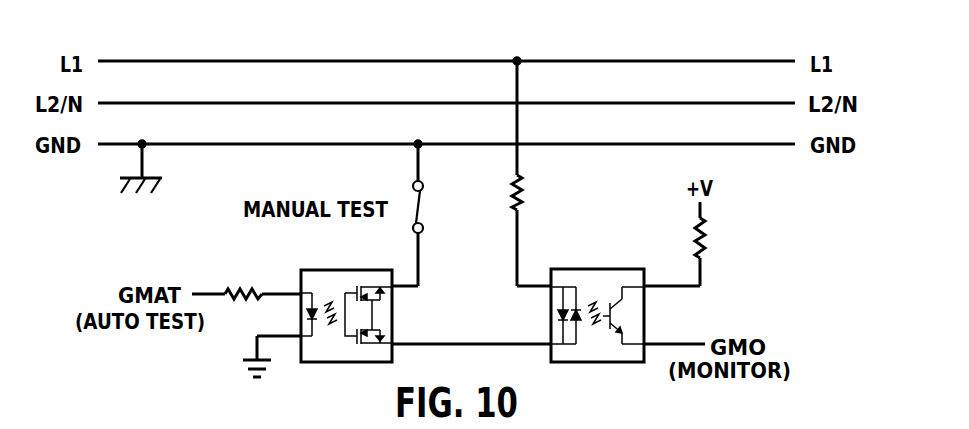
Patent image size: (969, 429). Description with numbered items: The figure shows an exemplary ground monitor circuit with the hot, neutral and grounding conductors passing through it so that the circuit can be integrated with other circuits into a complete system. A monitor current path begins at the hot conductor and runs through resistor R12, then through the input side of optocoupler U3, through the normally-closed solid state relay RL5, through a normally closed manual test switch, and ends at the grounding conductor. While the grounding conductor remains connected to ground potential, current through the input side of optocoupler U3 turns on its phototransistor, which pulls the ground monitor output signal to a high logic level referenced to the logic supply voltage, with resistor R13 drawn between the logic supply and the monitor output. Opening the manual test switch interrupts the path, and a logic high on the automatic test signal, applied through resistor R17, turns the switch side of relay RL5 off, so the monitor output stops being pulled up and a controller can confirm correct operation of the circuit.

The resistor R17 is at (263, 278).
The normally-closed solid state relay RL5 is at (346, 302).
The resistor R12 is at (542, 173).
The optocoupler U3 is at (597, 302).
The resistor R13 is at (701, 244).